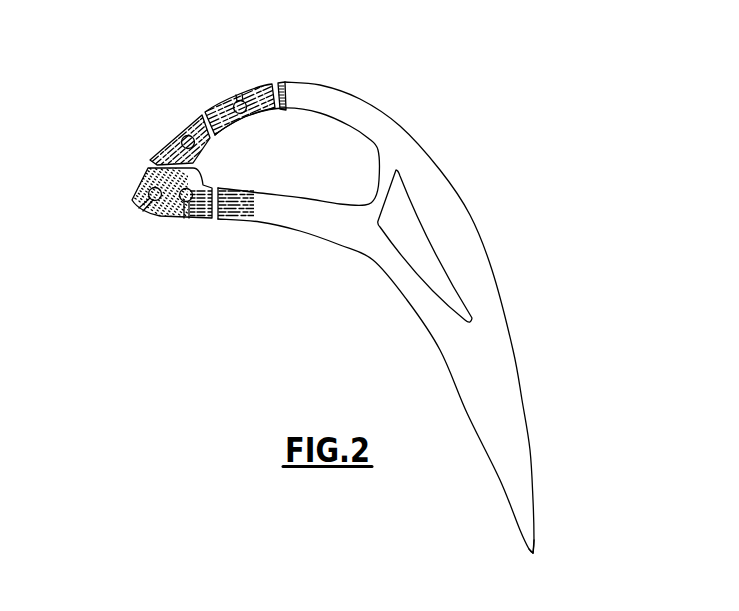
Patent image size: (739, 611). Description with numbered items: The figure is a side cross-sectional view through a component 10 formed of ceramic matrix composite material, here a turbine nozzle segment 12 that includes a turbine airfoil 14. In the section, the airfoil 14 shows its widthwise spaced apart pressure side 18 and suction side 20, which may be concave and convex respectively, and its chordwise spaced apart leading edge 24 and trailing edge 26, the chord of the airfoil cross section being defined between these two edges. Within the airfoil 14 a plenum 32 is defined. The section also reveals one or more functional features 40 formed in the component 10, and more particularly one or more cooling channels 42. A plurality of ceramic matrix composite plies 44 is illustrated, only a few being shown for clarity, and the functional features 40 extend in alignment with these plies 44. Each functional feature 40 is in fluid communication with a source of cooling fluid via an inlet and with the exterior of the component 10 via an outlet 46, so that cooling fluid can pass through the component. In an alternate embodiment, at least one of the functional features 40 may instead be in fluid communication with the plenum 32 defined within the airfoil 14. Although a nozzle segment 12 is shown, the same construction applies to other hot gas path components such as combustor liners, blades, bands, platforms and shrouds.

The component 10 is at (95, 136).
The turbine nozzle segment 12 is at (624, 215).
The turbine airfoil 14 is at (483, 278).
The airfoil pressure side 18 is at (363, 257).
The airfoil suction side 20 is at (452, 190).
The airfoil leading edge 24 is at (130, 198).
The airfoil trailing edge 26 is at (533, 553).
The plenum 32 is at (307, 168).
The functional feature 40 is at (258, 92).
The cooling channel 42 is at (190, 122).
The ceramic matrix composite ply 44 is at (167, 158).
The outlet 46 is at (230, 95).